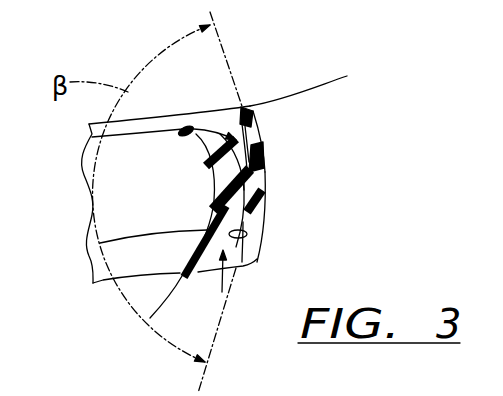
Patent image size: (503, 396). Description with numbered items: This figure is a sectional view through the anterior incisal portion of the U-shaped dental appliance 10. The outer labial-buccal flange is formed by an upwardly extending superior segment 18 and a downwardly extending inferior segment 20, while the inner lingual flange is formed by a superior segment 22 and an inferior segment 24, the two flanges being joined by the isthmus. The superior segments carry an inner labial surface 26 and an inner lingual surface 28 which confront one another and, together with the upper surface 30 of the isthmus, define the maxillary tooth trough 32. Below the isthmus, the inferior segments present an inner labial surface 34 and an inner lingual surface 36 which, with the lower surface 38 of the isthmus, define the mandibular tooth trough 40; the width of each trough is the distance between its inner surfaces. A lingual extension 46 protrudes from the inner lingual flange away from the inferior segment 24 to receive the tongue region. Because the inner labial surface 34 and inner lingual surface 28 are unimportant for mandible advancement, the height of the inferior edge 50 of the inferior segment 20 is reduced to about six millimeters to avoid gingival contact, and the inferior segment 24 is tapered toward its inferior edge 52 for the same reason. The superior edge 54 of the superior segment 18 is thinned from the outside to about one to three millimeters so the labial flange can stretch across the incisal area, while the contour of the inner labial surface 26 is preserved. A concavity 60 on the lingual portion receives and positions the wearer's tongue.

The appliance 10 is at (264, 54).
The superior segment 18 is at (257, 125).
The inferior segment 20 is at (259, 216).
The superior segment 22 is at (193, 137).
The inferior segment 24 is at (107, 242).
The inner labial surface 26 is at (247, 109).
The inner lingual surface 28 is at (201, 123).
The upper surface 30 is at (263, 150).
The maxillary tooth trough 32 is at (187, 131).
The inner labial surface 34 is at (247, 235).
The inner lingual surface 36 is at (210, 272).
The lower surface 38 is at (256, 185).
The mandibular tooth trough 40 is at (222, 292).
The lingual extension 46 is at (120, 278).
The inferior edge 50 is at (246, 262).
The inferior edge 52 is at (150, 318).
The superior edge 54 is at (314, 84).
The concavity 60 is at (210, 193).